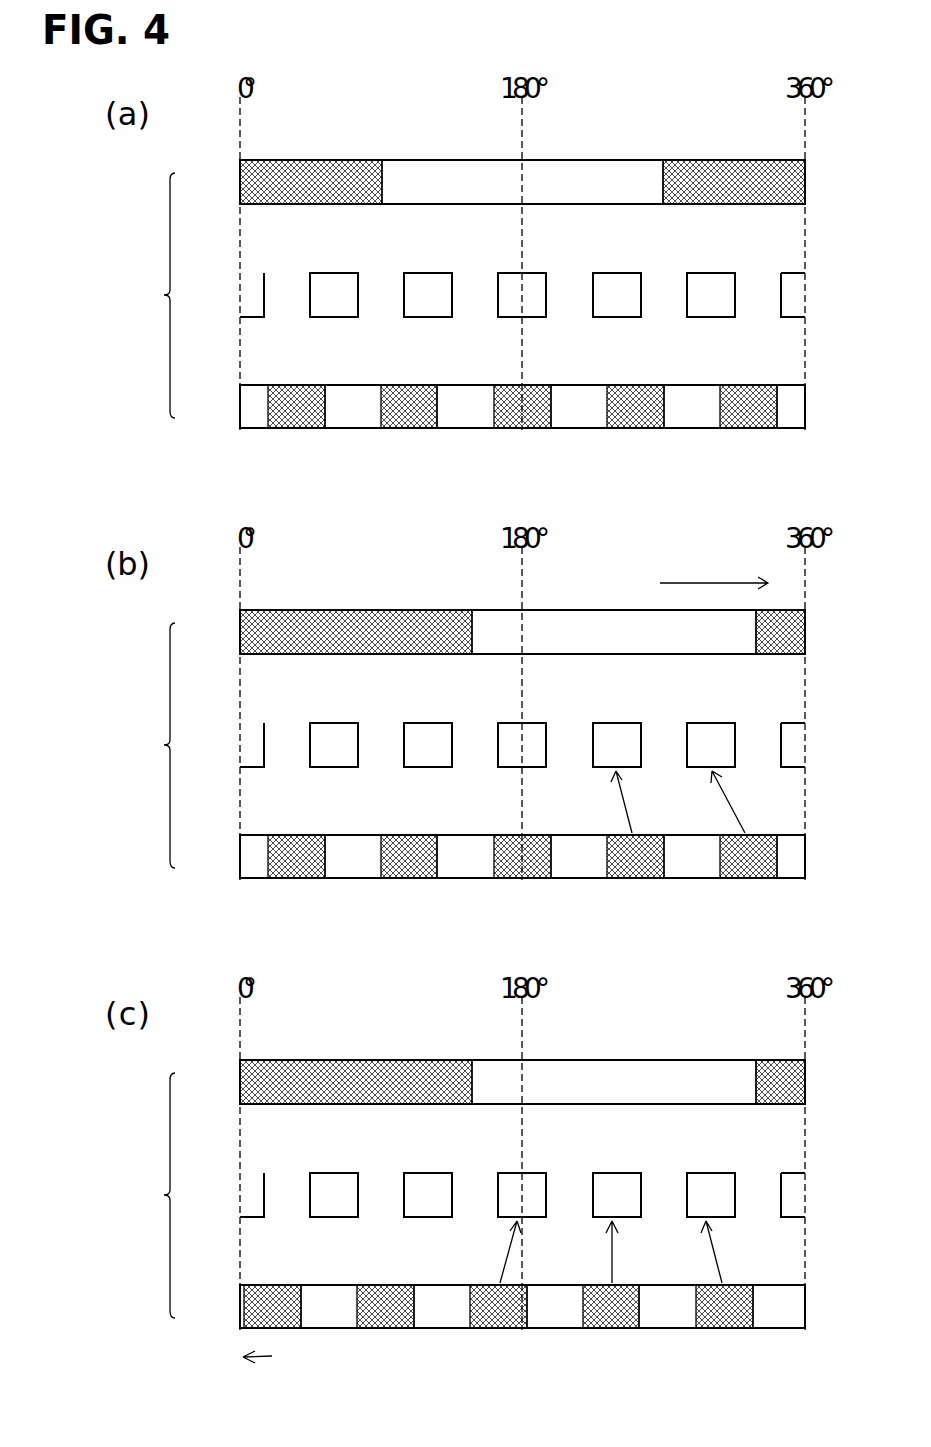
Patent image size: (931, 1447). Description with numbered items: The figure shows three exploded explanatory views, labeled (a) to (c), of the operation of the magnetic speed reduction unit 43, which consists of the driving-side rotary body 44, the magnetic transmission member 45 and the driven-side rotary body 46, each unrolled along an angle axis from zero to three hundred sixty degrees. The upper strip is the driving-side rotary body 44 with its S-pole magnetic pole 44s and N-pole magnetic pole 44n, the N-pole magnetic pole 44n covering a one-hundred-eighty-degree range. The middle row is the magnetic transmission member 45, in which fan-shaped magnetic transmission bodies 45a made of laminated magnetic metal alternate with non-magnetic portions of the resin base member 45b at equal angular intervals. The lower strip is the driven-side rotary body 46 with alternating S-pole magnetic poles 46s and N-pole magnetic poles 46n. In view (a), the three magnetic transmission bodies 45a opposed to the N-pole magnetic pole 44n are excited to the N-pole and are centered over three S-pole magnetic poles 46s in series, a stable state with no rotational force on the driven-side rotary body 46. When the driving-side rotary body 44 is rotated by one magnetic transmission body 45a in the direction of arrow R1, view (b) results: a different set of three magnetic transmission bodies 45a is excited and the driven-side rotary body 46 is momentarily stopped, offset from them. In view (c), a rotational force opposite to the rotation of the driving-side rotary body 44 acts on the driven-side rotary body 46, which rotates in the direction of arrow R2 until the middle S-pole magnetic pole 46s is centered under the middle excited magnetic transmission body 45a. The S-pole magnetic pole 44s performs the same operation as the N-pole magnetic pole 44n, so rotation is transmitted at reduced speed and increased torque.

The magnetic speed reduction unit 43 is at (153, 745).
The driving-side rotary body 44 is at (493, 607).
The S-pole magnetic pole 44s is at (522, 606).
The N-pole magnetic pole 44n is at (569, 606).
The magnetic transmission member 45 is at (493, 717).
The magnetic transmission body 45a is at (594, 695).
The base member 45b is at (568, 283).
The driven-side rotary body 46 is at (493, 831).
The S-pole magnetic pole 46s is at (513, 831).
The N-pole magnetic pole 46n is at (522, 831).
The rotational direction of driving-side rotary body R1 is at (714, 583).
The rotational direction of driven-side rotary body R2 is at (272, 1356).